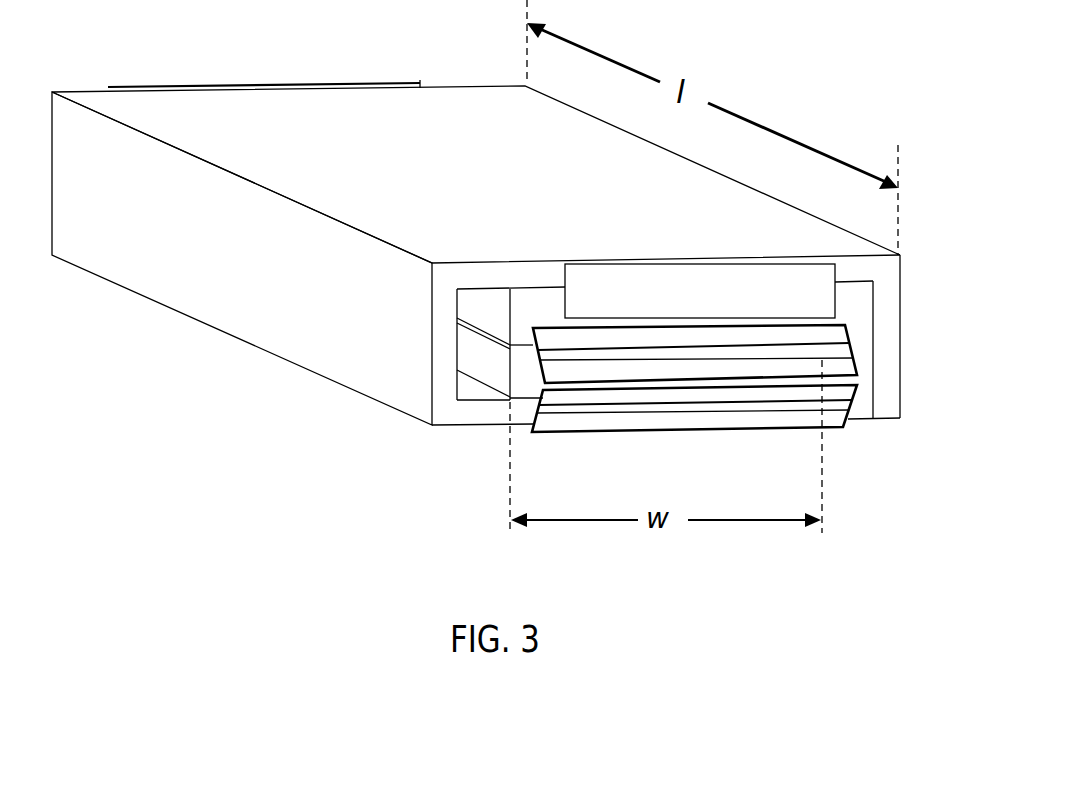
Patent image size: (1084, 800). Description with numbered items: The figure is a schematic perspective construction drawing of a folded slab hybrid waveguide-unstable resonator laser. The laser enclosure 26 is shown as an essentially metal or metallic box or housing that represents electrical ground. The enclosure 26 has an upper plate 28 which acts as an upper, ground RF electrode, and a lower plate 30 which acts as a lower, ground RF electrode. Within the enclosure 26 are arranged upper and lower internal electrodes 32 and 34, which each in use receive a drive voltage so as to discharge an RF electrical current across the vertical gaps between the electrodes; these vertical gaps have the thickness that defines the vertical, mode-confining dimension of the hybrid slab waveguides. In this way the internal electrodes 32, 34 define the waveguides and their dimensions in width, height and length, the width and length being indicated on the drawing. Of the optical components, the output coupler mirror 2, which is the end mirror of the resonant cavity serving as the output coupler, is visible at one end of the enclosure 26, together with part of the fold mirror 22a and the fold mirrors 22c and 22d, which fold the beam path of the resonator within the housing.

The output coupler mirror 2 is at (838, 290).
The fold mirror 22a is at (108, 88).
The fold mirror 22c is at (857, 355).
The fold mirror 22d is at (853, 415).
The laser enclosure 26 is at (220, 265).
The upper plate 28 is at (732, 216).
The lower plate 30 is at (462, 430).
The upper internal electrode 32 is at (490, 312).
The lower internal electrode 34 is at (490, 363).